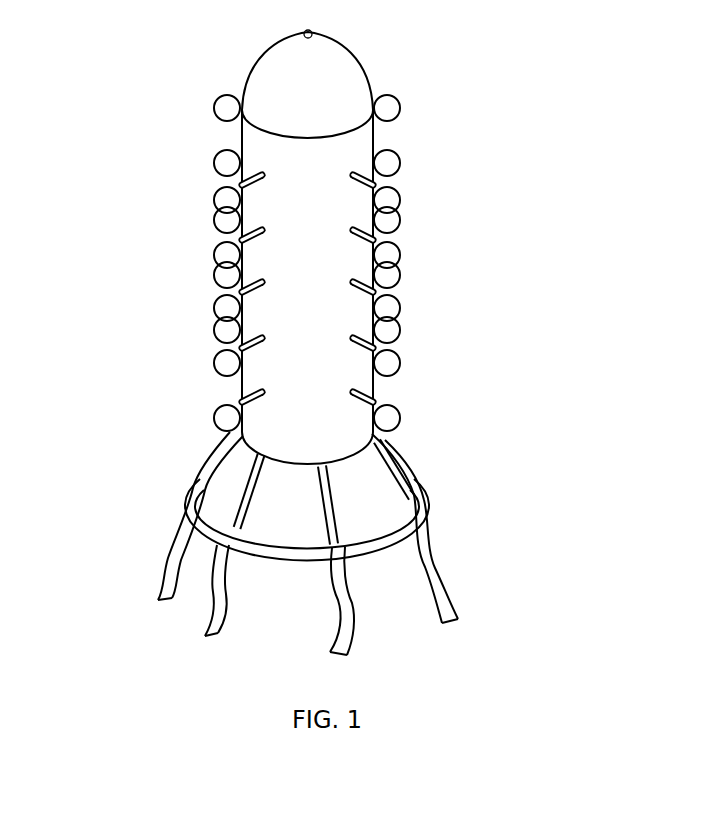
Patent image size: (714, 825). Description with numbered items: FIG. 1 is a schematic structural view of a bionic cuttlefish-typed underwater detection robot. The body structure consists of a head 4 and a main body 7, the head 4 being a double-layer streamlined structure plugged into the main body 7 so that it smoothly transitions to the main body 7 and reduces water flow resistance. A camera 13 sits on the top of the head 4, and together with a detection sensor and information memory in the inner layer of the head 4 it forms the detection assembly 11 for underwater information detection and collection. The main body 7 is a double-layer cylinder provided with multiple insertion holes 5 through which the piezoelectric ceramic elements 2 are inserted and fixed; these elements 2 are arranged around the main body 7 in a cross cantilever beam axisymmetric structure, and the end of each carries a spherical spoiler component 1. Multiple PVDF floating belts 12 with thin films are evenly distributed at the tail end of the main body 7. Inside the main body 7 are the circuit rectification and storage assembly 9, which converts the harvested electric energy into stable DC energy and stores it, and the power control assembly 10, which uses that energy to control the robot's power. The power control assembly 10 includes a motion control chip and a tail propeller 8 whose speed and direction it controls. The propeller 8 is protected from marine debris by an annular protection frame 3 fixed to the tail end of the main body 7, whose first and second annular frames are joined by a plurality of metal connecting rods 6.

The spherical spoiler component 1 is at (399, 200).
The piezoelectric ceramic element 2 is at (396, 235).
The annular protection frame 3 is at (393, 527).
The head 4 is at (246, 75).
The insertion hole 5 is at (236, 245).
The metal connecting rod 6 is at (240, 487).
The main body 7 is at (318, 161).
The propeller 8 is at (293, 470).
The circuit rectification and storage assembly 9 is at (313, 253).
The power control assembly 10 is at (330, 330).
The detection assembly 11 is at (330, 88).
The PVDF floating belt 12 is at (212, 592).
The camera 13 is at (303, 32).